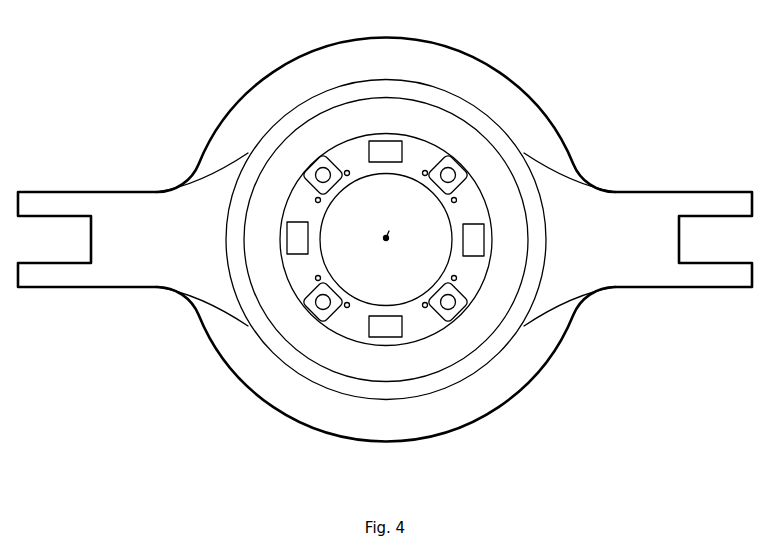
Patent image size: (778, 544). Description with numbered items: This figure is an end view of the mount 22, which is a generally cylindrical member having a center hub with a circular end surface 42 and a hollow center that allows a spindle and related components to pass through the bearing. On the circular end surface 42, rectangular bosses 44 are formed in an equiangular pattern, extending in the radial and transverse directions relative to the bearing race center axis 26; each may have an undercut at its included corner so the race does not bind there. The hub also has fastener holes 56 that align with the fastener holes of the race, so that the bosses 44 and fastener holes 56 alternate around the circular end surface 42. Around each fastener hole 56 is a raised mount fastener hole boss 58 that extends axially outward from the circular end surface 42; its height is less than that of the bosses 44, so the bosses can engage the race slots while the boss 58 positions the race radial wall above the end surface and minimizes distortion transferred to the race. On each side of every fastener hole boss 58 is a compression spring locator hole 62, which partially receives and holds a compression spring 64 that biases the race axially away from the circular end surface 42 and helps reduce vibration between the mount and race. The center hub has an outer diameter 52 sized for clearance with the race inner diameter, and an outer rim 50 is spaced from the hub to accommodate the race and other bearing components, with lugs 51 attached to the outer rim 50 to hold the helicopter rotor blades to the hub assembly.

The mount 22 is at (560, 370).
The bearing race center axis 26 is at (386, 243).
The circular end surface 42 is at (466, 219).
The bosses 44 is at (290, 246).
The outer rim 50 is at (597, 176).
The lugs 51 is at (146, 229).
The outer diameter 52 is at (493, 237).
The fastener holes 56 is at (327, 185).
The mount fastener hole boss 58 is at (340, 182).
The compression spring locator hole 62 is at (347, 171).
The compression spring 64 is at (317, 198).